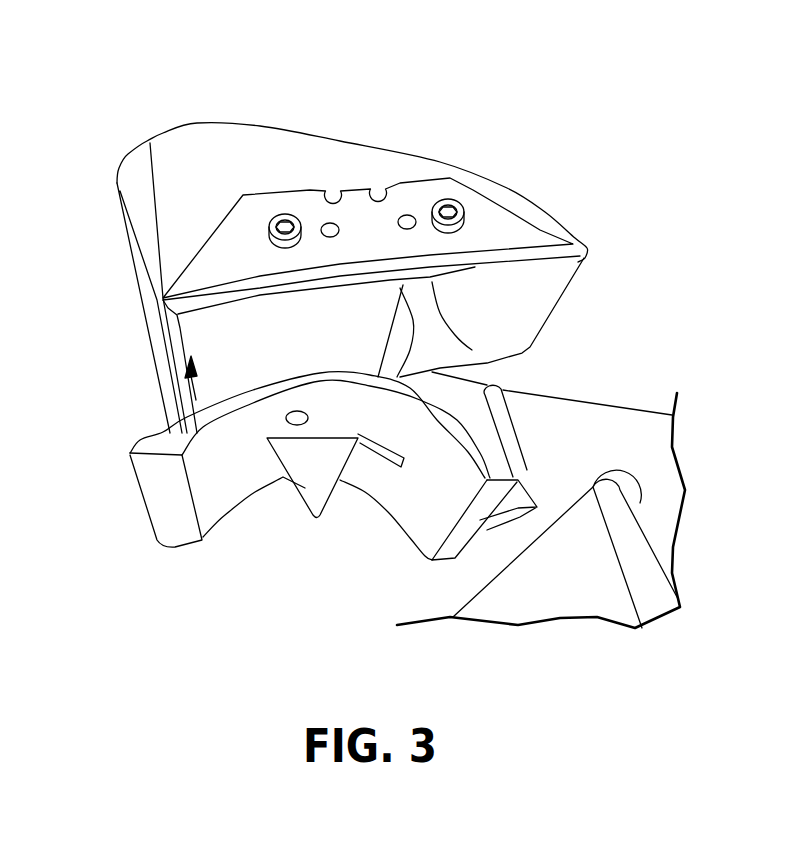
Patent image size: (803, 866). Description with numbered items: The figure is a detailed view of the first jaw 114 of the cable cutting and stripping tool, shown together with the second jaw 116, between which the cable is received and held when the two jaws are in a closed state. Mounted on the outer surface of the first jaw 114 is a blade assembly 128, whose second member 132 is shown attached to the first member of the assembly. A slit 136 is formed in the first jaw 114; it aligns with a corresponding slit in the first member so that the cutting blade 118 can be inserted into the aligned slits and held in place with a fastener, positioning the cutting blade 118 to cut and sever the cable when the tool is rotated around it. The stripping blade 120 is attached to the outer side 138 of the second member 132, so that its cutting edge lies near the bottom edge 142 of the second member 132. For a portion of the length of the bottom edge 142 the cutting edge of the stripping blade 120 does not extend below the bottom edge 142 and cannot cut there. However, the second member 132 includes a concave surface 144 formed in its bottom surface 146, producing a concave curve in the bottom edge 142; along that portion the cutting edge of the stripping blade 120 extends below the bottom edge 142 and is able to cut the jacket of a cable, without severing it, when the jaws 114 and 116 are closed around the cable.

The blade assembly 128 is at (279, 90).
The second member 132 is at (150, 143).
The outer side 138 is at (507, 195).
The stripping blade 120 is at (402, 200).
The concave surface 144 is at (217, 320).
The bottom surface 146 is at (185, 400).
The bottom edge 142 is at (476, 354).
The first jaw 114 is at (153, 482).
The cutting blade 118 is at (287, 473).
The slit 136 is at (340, 480).
The second jaw 116 is at (593, 590).